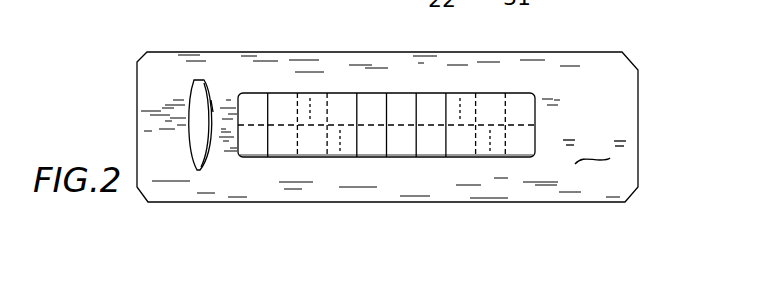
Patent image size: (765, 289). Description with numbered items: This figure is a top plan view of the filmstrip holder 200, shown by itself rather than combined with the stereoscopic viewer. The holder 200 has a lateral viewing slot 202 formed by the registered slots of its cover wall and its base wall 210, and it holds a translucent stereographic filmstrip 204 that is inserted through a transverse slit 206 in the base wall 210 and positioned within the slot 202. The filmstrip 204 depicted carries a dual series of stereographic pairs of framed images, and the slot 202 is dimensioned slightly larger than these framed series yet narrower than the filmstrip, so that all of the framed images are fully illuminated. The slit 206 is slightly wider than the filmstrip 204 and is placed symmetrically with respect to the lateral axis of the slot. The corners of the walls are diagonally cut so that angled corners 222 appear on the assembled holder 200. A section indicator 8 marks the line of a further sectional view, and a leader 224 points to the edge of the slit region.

The filmstrip holder 200 is at (596, 53).
The viewing slot 202 is at (460, 106).
The translucent stereographic filmstrip 204 is at (340, 147).
The slit 206 is at (210, 161).
The base wall 210 is at (594, 148).
The angled corners 222 is at (137, 62).
The lens edge 224 is at (214, 108).
The section line for FIG. 8 is at (180, 122).